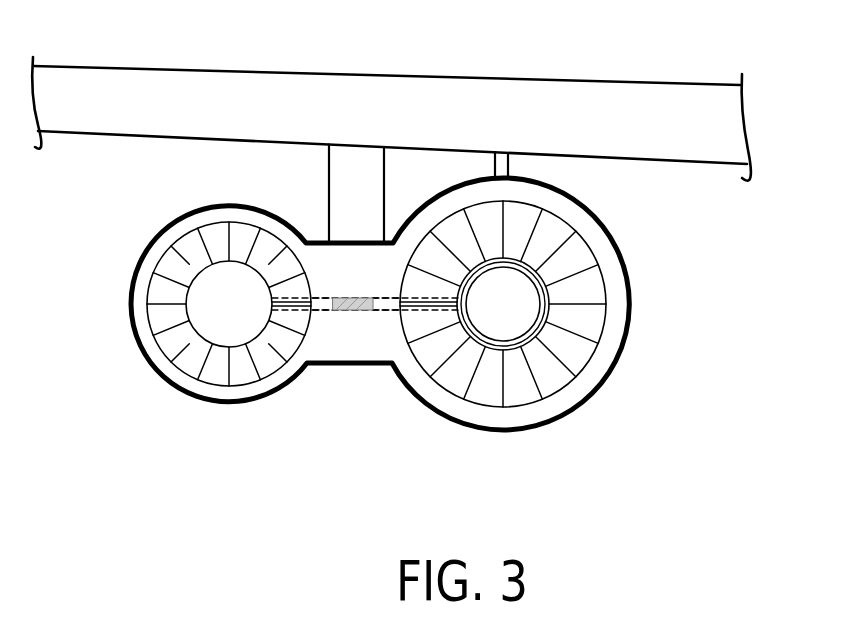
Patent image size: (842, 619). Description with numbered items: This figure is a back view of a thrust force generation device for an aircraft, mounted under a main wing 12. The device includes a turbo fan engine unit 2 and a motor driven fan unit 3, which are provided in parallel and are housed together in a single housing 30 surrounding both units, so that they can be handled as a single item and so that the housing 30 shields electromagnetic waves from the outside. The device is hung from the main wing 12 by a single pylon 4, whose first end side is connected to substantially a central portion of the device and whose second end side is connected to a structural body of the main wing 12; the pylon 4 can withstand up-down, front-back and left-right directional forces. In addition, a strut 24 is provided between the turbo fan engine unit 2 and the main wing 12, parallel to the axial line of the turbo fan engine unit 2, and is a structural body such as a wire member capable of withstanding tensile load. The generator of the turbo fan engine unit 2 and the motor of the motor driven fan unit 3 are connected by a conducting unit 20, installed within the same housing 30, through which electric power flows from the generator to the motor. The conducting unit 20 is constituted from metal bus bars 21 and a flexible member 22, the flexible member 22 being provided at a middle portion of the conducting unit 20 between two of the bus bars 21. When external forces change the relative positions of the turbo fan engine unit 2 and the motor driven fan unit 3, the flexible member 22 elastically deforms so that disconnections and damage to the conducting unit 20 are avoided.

The main wing 12 is at (412, 93).
The pylon 4 is at (338, 178).
The strut 24 is at (492, 163).
The housing 30 is at (625, 268).
The motor driven fan unit 3 is at (214, 422).
The turbo fan engine unit 2 is at (543, 450).
The conducting unit 20 is at (353, 347).
The bus bar 21 is at (323, 311).
The flexible member 22 is at (352, 297).